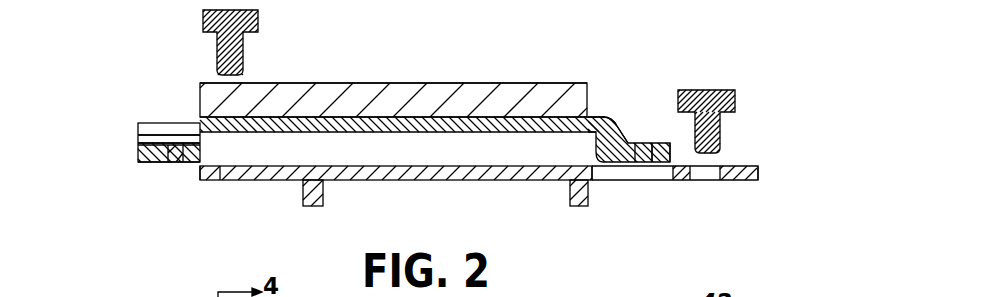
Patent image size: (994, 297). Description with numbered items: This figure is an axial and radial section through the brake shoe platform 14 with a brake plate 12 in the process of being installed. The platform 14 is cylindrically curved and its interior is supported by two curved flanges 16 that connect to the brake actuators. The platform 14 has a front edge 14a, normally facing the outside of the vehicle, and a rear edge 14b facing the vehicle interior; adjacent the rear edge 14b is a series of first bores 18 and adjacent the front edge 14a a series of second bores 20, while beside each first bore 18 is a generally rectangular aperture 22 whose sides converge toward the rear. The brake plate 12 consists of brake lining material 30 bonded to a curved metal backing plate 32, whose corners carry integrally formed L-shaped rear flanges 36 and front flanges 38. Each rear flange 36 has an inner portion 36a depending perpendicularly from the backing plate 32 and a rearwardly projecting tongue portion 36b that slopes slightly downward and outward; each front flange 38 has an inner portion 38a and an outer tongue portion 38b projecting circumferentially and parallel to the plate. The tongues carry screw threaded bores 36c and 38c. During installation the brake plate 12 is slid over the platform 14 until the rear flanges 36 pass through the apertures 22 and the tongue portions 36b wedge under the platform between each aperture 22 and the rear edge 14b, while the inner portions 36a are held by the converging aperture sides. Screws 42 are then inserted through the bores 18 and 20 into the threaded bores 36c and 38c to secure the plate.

The brake plate 12 is at (525, 83).
The platform 14 is at (427, 183).
The front edge 14a is at (200, 167).
The rear edge 14b is at (758, 175).
The curved flanges 16 is at (325, 193).
The first circumferentially spaced bores 18 is at (702, 181).
The second circumferentially spaced bores 20 is at (223, 176).
The aperture 22 is at (598, 180).
The brake lining material 30 is at (445, 83).
The backing plate 32 is at (398, 117).
The rear flanges 36 is at (635, 143).
The inner portion 36a is at (627, 135).
The tongue portion 36b is at (667, 143).
The screw threaded bore 36c is at (657, 143).
The front flanges 38 is at (152, 123).
The inner portion 38a is at (138, 141).
The outer tongue portion 38b is at (138, 153).
The screw threaded bore 38c is at (175, 165).
The screws 42 is at (203, 17).